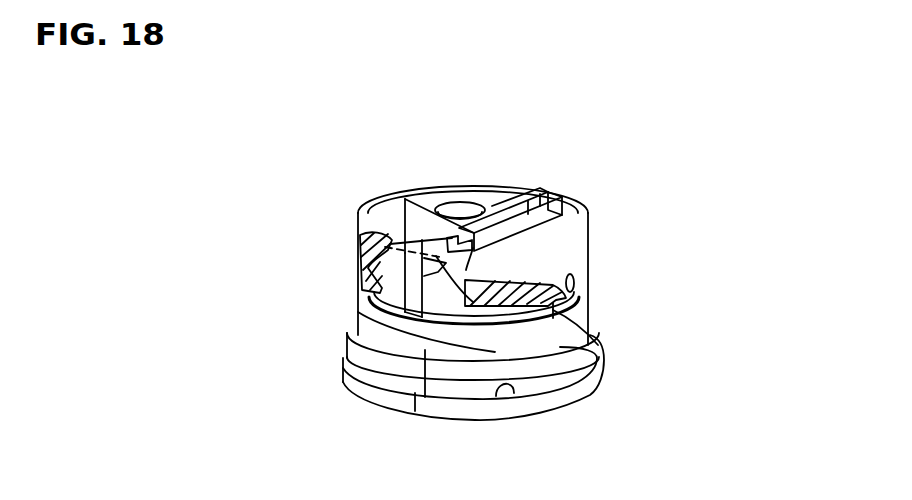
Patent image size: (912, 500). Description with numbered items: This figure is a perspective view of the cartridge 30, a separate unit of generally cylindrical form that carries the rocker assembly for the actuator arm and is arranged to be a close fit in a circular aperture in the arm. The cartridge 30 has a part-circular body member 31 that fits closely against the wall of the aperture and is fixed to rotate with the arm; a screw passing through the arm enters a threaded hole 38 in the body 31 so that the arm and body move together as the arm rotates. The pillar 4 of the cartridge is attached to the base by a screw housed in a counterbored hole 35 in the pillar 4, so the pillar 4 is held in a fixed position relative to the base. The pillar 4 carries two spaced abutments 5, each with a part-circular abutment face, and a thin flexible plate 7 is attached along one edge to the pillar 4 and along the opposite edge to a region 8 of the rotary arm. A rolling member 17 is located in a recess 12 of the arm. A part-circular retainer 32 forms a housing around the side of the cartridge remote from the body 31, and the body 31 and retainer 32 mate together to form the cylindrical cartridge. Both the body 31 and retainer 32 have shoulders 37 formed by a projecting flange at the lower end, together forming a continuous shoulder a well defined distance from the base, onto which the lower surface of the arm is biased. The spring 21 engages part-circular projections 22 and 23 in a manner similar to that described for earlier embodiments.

The cartridge 30 is at (628, 157).
The body member 31 is at (535, 263).
The abutments 5 is at (363, 224).
The part-circular projection 23 is at (417, 201).
The pillar 4 is at (415, 200).
The counterbored hole 35 is at (460, 208).
The flexible plate 7 is at (512, 207).
The rolling member 17 is at (488, 206).
The region of the rotary arm 8 is at (458, 297).
The recess 12 is at (462, 285).
The threaded hole 38 is at (575, 279).
The retainer 32 is at (357, 347).
The part-circular projection 22 is at (595, 368).
The spring 21 is at (540, 403).
The shoulders 37 is at (345, 360).